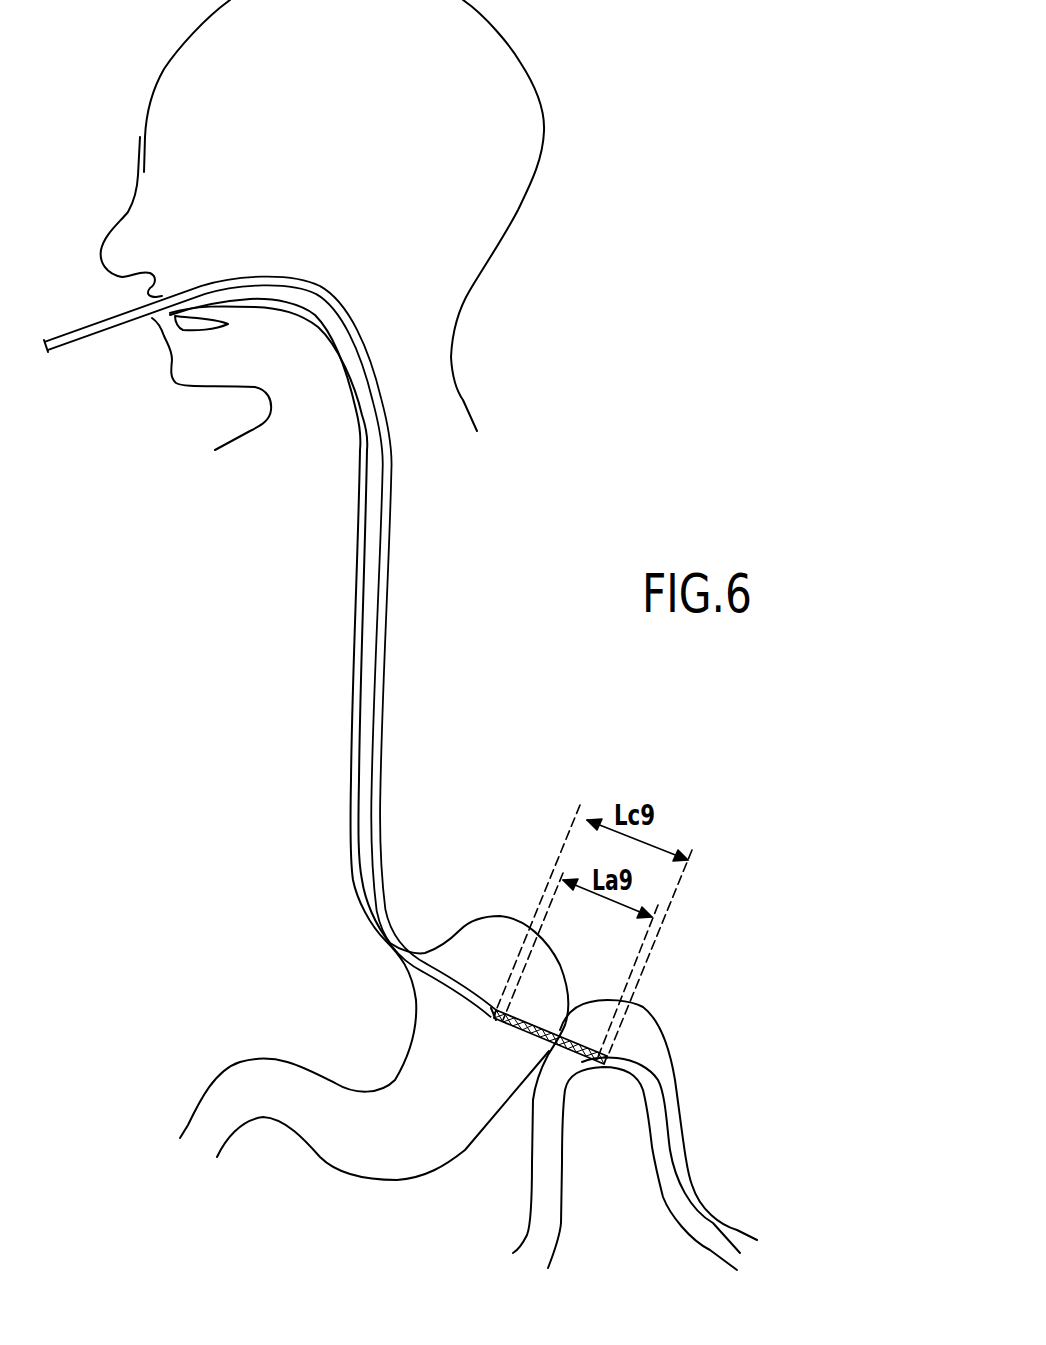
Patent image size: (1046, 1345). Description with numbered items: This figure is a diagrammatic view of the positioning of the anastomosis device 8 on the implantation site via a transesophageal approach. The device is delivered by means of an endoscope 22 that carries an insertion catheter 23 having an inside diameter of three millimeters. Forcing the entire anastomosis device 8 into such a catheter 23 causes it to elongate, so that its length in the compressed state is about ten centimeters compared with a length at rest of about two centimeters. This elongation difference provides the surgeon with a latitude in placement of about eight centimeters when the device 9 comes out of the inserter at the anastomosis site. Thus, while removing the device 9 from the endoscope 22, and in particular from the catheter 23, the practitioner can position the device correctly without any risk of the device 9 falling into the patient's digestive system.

The endoscope 22 is at (382, 774).
The catheter 23 is at (495, 1018).
The anastomosis device 8 is at (541, 1104).
The device 9 is at (556, 1050).